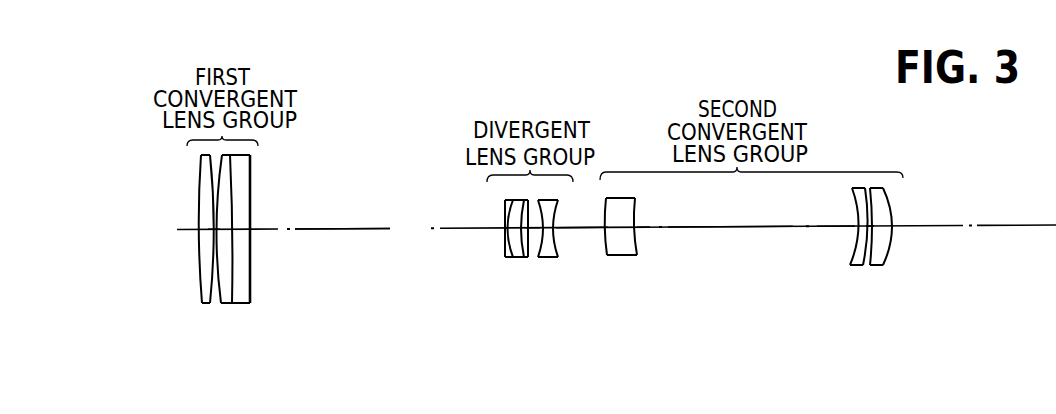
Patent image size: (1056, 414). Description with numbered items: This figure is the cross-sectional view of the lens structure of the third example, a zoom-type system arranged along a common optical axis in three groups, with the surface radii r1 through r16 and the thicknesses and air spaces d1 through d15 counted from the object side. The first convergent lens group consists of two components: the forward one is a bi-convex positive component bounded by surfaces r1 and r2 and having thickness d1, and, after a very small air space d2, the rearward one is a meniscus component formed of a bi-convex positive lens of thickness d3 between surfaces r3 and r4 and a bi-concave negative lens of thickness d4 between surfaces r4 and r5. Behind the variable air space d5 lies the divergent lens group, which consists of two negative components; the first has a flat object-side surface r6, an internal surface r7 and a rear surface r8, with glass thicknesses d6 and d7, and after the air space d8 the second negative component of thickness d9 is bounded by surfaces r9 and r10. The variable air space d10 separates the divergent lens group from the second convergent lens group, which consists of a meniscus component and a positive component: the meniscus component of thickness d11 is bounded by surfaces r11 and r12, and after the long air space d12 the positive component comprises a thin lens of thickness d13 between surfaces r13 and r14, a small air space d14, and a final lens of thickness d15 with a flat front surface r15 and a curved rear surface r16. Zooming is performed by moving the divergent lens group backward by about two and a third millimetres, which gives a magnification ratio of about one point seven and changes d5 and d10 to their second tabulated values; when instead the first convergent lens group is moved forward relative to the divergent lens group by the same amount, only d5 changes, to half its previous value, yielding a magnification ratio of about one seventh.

The radius of curvature of first surface r1 is at (203, 304).
The radius of curvature of second surface r2 is at (210, 304).
The radius of curvature of third surface r3 is at (222, 304).
The radius of curvature of fourth surface r4 is at (232, 304).
The radius of curvature of fifth surface r5 is at (250, 304).
The radius of curvature of sixth surface r6 is at (505, 217).
The radius of curvature of seventh surface r7 is at (511, 212).
The radius of curvature of eighth surface r8 is at (522, 212).
The radius of curvature of ninth surface r9 is at (538, 203).
The radius of curvature of tenth surface r10 is at (555, 205).
The radius of curvature of eleventh surface r11 is at (605, 256).
The radius of curvature of twelfth surface r12 is at (637, 256).
The radius of curvature of thirteenth surface r13 is at (856, 266).
The radius of curvature of fourteenth surface r14 is at (867, 266).
The radius of curvature of fifteenth surface r15 is at (876, 188).
The radius of curvature of sixteenth surface r16 is at (891, 195).
The lens thickness d1 is at (206, 229).
The air space d2 is at (213, 229).
The lens thickness d3 is at (225, 229).
The lens thickness d4 is at (240, 230).
The air space d5 is at (393, 221).
The lens thickness d6 is at (505, 241).
The lens thickness d7 is at (512, 257).
The air space d8 is at (533, 257).
The lens thickness d9 is at (553, 241).
The air space d10 is at (569, 230).
The lens thickness d11 is at (622, 226).
The air space d12 is at (765, 224).
The lens thickness d13 is at (862, 228).
The air space d14 is at (865, 228).
The lens thickness d15 is at (878, 229).